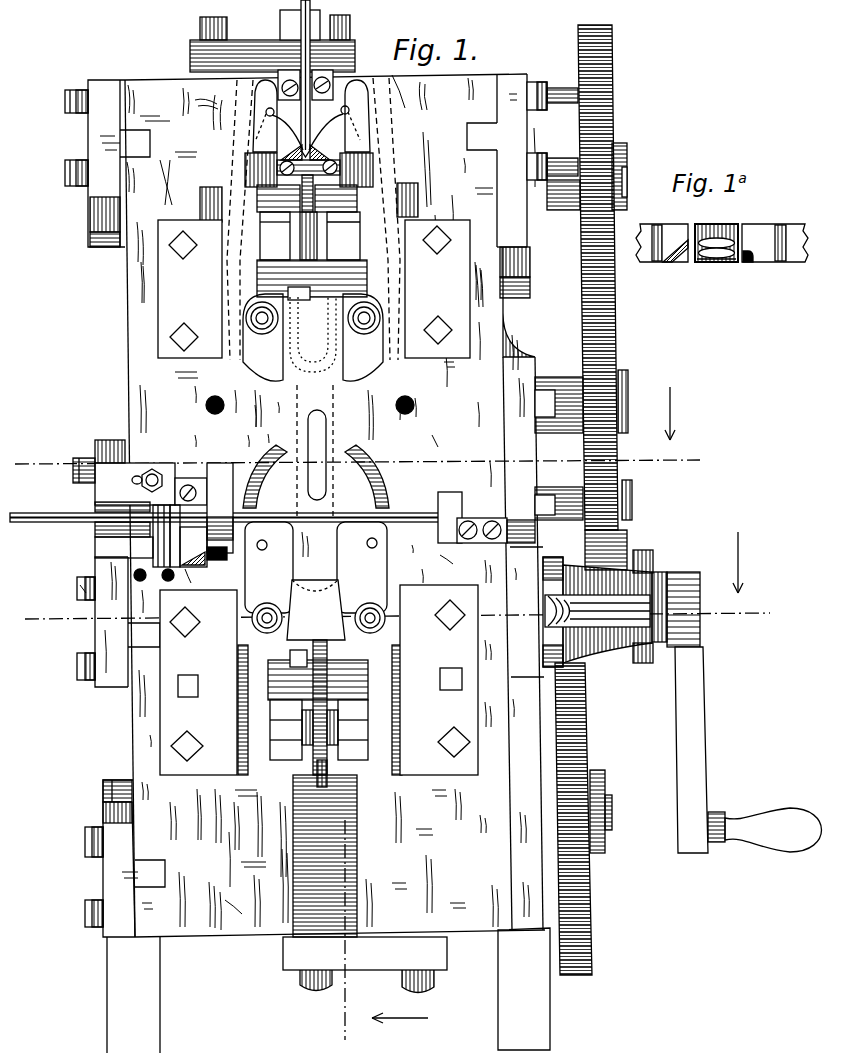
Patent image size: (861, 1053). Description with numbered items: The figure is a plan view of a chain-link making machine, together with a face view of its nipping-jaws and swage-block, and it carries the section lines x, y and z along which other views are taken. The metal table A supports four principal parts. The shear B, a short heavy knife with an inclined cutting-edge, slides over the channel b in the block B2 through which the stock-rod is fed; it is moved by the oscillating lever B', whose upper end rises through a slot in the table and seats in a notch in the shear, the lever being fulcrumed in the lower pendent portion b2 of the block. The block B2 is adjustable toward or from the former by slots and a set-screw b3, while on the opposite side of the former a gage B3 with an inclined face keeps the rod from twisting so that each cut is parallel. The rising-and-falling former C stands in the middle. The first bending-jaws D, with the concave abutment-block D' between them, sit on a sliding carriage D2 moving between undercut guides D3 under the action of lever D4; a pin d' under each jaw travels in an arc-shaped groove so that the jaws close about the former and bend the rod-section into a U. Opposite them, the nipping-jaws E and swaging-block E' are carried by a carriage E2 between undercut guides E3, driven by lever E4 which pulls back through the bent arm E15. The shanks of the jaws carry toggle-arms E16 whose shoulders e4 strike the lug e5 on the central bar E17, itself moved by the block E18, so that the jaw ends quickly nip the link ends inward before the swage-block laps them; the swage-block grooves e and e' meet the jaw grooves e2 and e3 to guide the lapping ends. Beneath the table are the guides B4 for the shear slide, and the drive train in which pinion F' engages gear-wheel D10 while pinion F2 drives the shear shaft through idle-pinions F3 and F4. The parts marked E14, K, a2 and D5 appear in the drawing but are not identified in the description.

In FIG. 1, the table A is at (215, 140).
In FIG. 1, the block E18 is at (292, 22).
In FIG. 1, the central bar E17 is at (307, 110).
In FIG. 1, the toggle-arms E16 is at (321, 143).
In FIG. 1, the wedge E14 is at (289, 145).
In FIG. 1, the shoulders e4 is at (308, 162).
In FIG. 1, the lug e5 is at (317, 193).
In FIG. 1, the bent arm E15 is at (300, 228).
In FIG. 1, the lever E4 is at (322, 227).
In FIG. 1, the carriage E2 is at (358, 262).
In FIG. 1, the undercut guides E3 is at (314, 272).
In FIG. 1, the nipping-jaws E is at (308, 229).
In FIG. 1A, the nipping-jaws E is at (722, 243).
In FIG. 1, the swaging-block E' is at (313, 334).
In FIG. 1A, the swaging-block E' is at (716, 234).
In FIG. 1, the guide K is at (373, 160).
In FIG. 1, the former C is at (315, 452).
In FIG. 1, the curved guide slots a2 is at (317, 476).
In FIG. 1, the section line z z is at (352, 429).
In FIG. 1, the section line y y is at (396, 580).
In FIG. 1, the section line x x is at (382, 936).
In FIG. 1, the lower pendent portion b2 is at (227, 505).
In FIG. 1, the block B2 is at (153, 496).
In FIG. 1, the set-screw b3 is at (154, 468).
In FIG. 1, the channel b is at (193, 496).
In FIG. 1, the shear B is at (151, 541).
In FIG. 1, the lever B' is at (204, 549).
In FIG. 1, the gage B3 is at (486, 517).
In FIG. 1, the guides B4 is at (547, 164).
In FIG. 1, the bending-jaws D is at (316, 577).
In FIG. 1, the pin d' is at (325, 556).
In FIG. 1, the abutment-block D' is at (316, 610).
In FIG. 1, the sliding carriage D2 is at (338, 662).
In FIG. 1, the undercut guides D3 is at (319, 680).
In FIG. 1, the lever D4 is at (334, 752).
In FIG. 1, the slide blocks D5 is at (312, 690).
In FIG. 1, the gear-wheel D10 is at (587, 730).
In FIG. 1, the idle-pinion F4 is at (628, 384).
In FIG. 1, the idle-pinion F3 is at (630, 505).
In FIG. 1, the pinion F' is at (598, 598).
In FIG. 1, the pinion F2 is at (607, 658).
In FIG. 1A, the groove e2 is at (675, 262).
In FIG. 1A, the upper groove e is at (722, 233).
In FIG. 1A, the lower groove e' is at (716, 271).
In FIG. 1A, the groove e3 is at (755, 262).